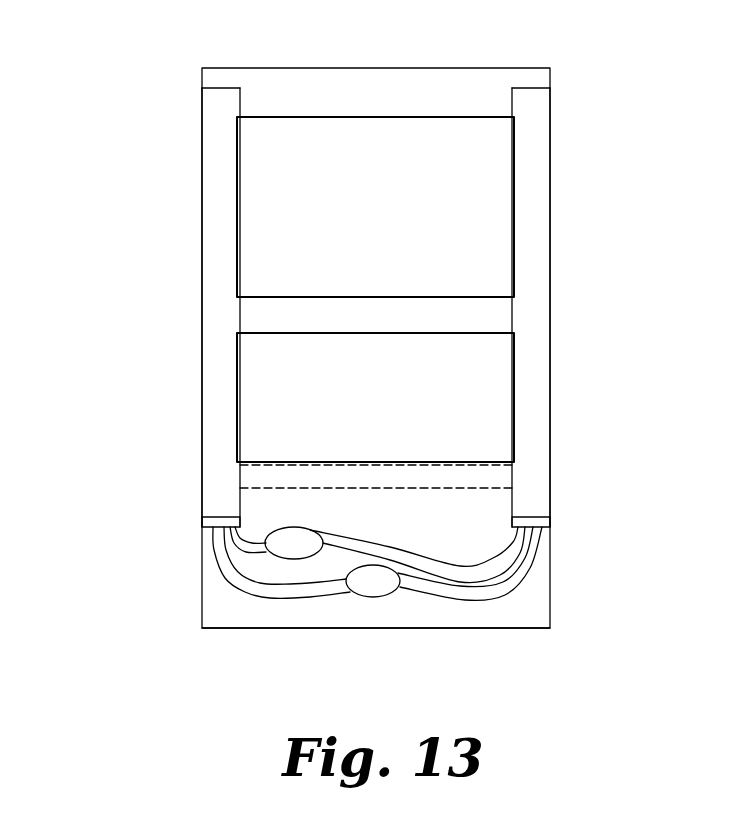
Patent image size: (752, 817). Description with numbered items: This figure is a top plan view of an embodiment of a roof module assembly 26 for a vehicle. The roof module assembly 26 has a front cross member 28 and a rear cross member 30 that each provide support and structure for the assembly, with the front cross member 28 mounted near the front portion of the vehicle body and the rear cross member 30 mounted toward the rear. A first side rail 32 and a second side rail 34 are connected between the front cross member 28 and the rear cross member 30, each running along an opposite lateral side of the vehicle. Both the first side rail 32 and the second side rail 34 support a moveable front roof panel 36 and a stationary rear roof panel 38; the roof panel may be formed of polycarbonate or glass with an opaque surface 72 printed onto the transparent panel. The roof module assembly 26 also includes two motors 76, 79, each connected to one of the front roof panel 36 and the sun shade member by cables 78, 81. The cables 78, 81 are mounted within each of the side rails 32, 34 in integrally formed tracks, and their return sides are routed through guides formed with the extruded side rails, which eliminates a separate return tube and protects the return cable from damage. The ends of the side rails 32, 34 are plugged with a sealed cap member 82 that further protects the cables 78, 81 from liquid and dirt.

The roof module assembly 26 is at (112, 465).
The front cross member 28 is at (473, 613).
The rear cross member 30 is at (380, 90).
The first side rail 32 is at (551, 270).
The second side rail 34 is at (200, 233).
The front roof panel 36 is at (498, 368).
The rear roof panel 38 is at (498, 206).
The opaque surface 72 is at (200, 387).
The motor 76 is at (296, 560).
The cable 78 is at (263, 552).
The motor 79 is at (376, 597).
The cable 81 is at (518, 587).
The sealed cap member 82 is at (200, 523).